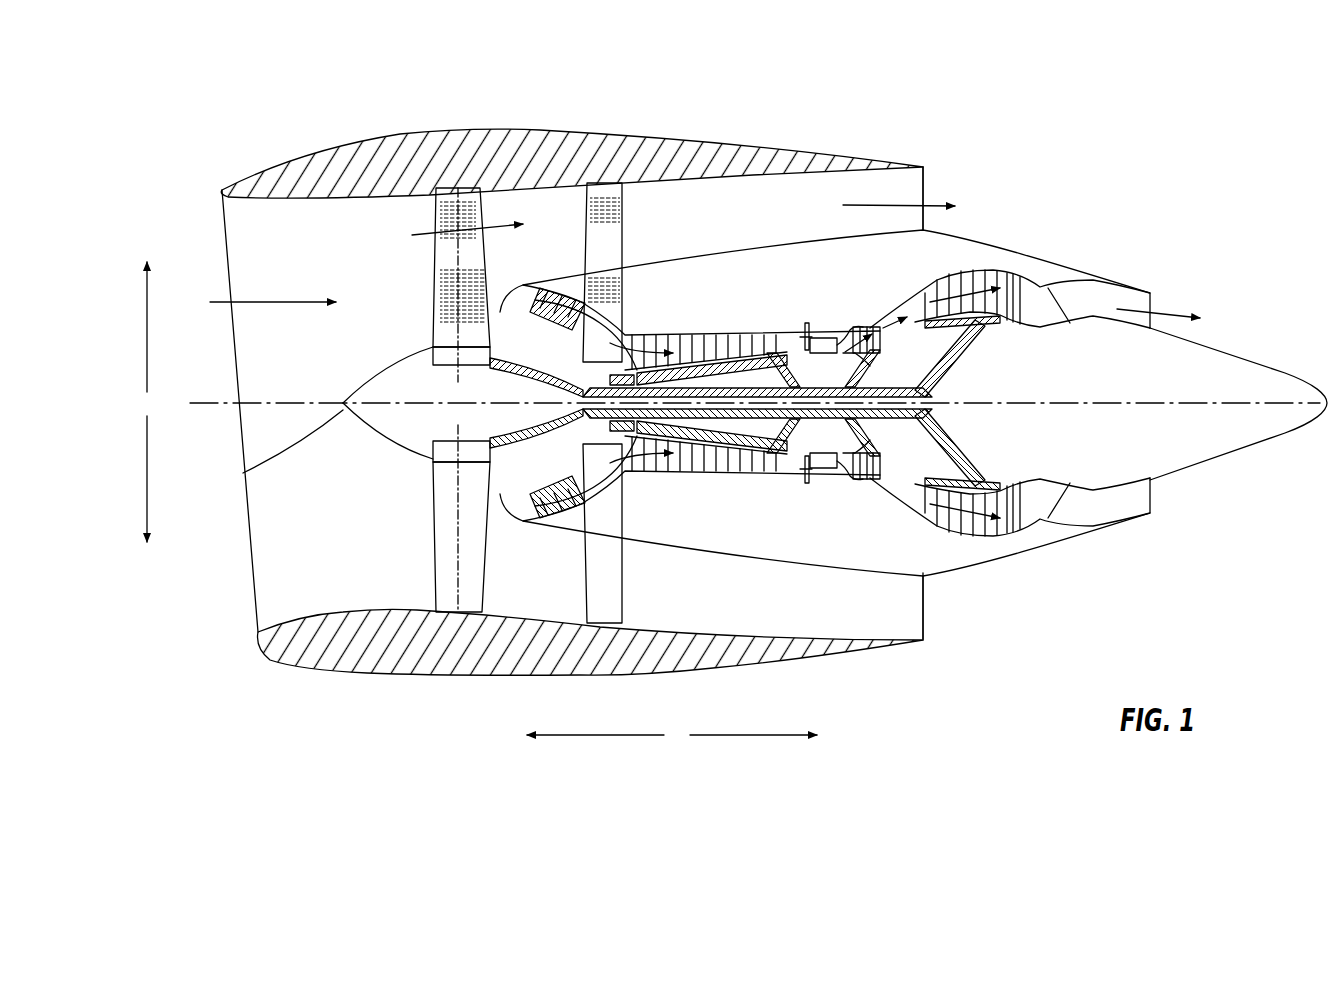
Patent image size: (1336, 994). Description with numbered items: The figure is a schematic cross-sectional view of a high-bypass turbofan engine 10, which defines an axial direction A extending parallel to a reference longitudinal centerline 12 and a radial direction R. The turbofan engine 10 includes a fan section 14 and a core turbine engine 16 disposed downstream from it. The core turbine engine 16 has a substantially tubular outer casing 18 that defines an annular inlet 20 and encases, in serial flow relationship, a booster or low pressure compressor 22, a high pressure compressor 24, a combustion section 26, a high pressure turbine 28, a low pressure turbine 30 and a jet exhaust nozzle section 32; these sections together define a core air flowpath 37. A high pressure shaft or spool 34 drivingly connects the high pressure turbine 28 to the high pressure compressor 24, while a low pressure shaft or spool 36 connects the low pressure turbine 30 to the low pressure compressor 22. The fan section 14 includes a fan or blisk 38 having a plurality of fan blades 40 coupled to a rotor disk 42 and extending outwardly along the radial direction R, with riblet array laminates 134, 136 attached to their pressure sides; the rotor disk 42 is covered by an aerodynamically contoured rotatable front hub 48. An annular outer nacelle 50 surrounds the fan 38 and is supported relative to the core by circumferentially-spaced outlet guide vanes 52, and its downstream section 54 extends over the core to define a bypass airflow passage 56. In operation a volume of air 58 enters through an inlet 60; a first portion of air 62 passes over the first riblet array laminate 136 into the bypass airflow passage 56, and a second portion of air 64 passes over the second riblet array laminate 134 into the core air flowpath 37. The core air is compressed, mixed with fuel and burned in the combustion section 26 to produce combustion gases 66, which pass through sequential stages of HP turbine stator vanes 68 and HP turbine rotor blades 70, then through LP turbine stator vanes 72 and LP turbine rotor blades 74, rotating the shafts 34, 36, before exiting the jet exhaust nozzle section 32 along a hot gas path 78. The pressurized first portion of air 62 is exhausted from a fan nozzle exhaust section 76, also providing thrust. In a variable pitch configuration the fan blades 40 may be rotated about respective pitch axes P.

The turbofan engine 10 is at (1070, 145).
The longitudinal centerline 12 is at (1090, 400).
The fan section 14 is at (392, 222).
The core turbine engine 16 is at (743, 287).
The outer casing 18 is at (783, 568).
The annular inlet 20 is at (528, 510).
The low pressure compressor 22 is at (588, 480).
The high pressure compressor 24 is at (656, 460).
The combustion section 26 is at (825, 467).
The high pressure turbine 28 is at (977, 467).
The low pressure turbine 30 is at (1008, 528).
The jet exhaust nozzle section 32 is at (1068, 514).
The high pressure shaft or spool 34 is at (853, 362).
The low pressure shaft or spool 36 is at (963, 367).
The core air flowpath 37 is at (613, 462).
The fan 38 is at (398, 456).
The fan blades 40 is at (433, 555).
The rotor disk 42 is at (450, 357).
The front hub 48 is at (243, 473).
The outer nacelle 50 is at (478, 677).
The outlet guide vanes 52 is at (623, 230).
The downstream section of the nacelle 54 is at (870, 158).
The bypass airflow passage 56 is at (797, 224).
The volume of air 58 is at (270, 300).
The inlet 60 is at (251, 613).
The first portion of air 62 is at (887, 200).
The second portion of air 64 is at (515, 290).
The combustion gases 66 is at (862, 323).
The HP turbine stator vanes 68 is at (843, 478).
The HP turbine rotor blades 70 is at (930, 437).
The LP turbine stator vanes 72 is at (930, 523).
The LP turbine rotor blades 74 is at (943, 523).
The fan nozzle exhaust section 76 is at (913, 190).
The hot gas path 78 is at (913, 308).
The second riblet array laminate 134 is at (440, 308).
The first riblet array laminate 136 is at (493, 252).
The radial direction R is at (147, 402).
The axial direction A is at (672, 735).
The pitch axes P is at (460, 207).